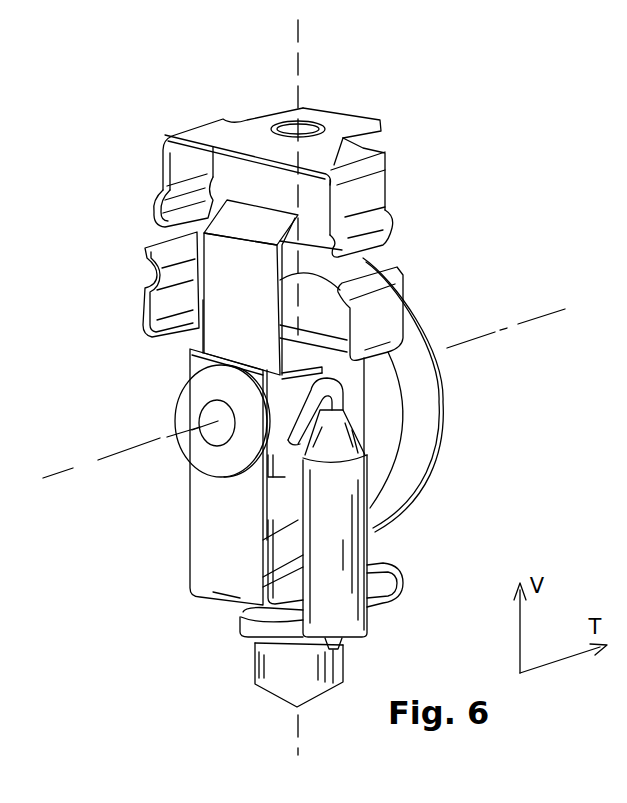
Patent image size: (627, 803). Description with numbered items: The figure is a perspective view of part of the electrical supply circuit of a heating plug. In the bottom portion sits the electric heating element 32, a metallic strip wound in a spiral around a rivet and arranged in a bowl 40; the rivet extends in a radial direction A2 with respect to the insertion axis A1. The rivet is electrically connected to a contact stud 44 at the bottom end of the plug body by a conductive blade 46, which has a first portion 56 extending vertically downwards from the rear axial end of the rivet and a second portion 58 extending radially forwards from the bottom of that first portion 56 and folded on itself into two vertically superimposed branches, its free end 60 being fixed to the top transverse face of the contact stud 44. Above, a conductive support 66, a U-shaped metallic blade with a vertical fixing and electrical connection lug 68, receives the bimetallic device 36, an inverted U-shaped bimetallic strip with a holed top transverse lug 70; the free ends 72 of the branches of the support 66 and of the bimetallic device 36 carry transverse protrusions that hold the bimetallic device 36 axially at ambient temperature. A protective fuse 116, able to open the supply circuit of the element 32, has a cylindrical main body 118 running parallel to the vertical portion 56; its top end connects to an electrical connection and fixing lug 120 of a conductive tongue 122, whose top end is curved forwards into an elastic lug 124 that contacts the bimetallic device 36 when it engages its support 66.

The insertion axis A1 is at (298, 31).
The radial direction of the rivet A2 is at (89, 460).
The electric heating element 32 is at (446, 443).
The bimetallic device 36 is at (388, 182).
The bowl 40 is at (408, 470).
The contact stud 44 is at (303, 680).
The conductive blade 46 is at (184, 591).
The first portion of the conductive blade 56 is at (217, 545).
The second portion of the conductive blade 58 is at (373, 565).
The free end of the second portion 60 is at (247, 632).
The conductive support 66 is at (142, 310).
The vertical fixing and electrical connection lug 68 is at (353, 378).
The top transverse lug 70 is at (348, 120).
The free ends of the branches 72 is at (153, 223).
The protective fuse 116 is at (372, 623).
The cylindrical main body of the fuse 118 is at (347, 595).
The electrical connection and fixing lug 120 is at (292, 390).
The conductive tongue 122 is at (210, 318).
The elastic lug 124 is at (247, 215).